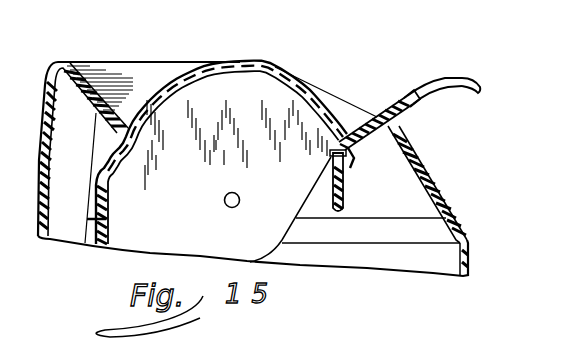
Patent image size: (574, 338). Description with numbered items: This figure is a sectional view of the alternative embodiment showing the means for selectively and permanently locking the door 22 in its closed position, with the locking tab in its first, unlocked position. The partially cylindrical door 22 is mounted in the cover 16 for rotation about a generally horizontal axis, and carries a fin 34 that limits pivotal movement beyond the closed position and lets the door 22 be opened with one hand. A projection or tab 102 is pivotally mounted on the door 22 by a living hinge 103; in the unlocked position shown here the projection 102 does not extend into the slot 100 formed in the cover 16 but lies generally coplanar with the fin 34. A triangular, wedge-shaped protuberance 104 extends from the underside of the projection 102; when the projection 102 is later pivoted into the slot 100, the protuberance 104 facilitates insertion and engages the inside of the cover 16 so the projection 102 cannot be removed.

The cover 16 is at (463, 222).
The door 22 is at (271, 72).
The fin 34 is at (462, 79).
The slot 100 is at (385, 122).
The projection 102 is at (408, 97).
The living hinge 103 is at (373, 113).
The protuberance 104 is at (415, 103).